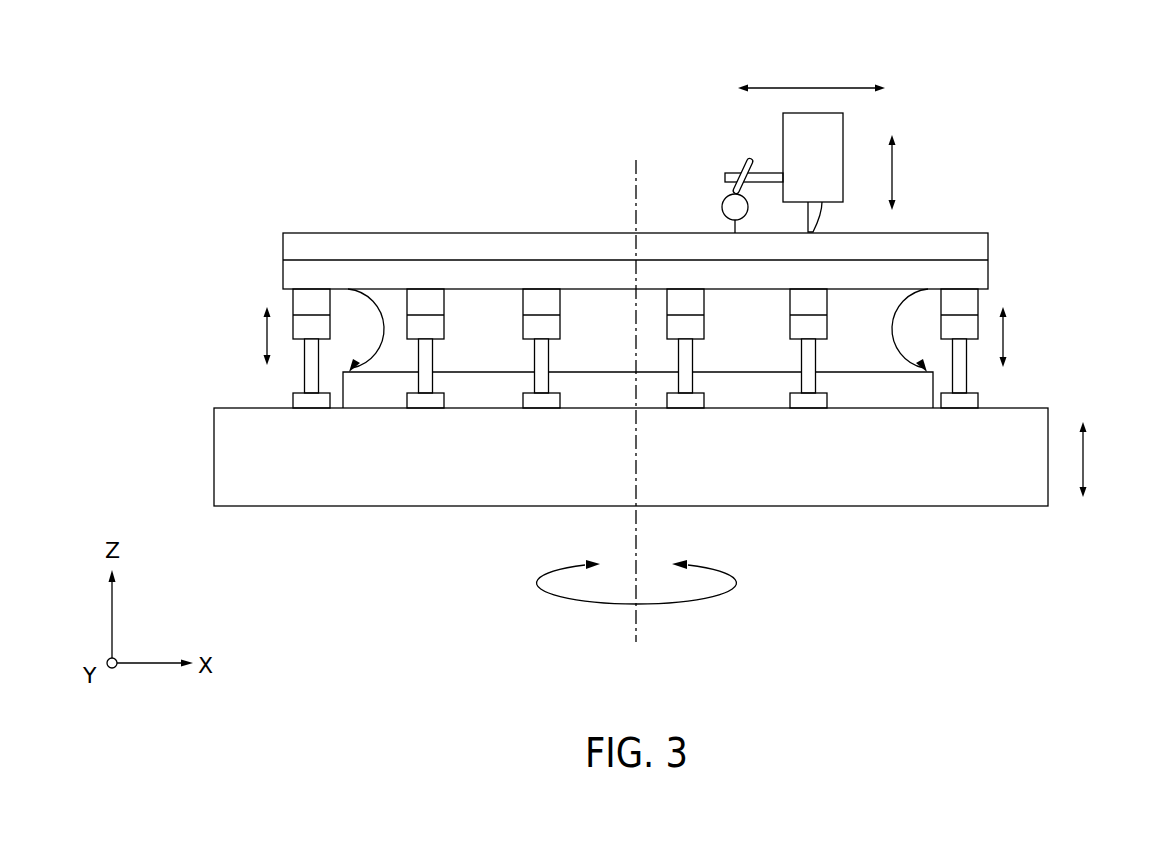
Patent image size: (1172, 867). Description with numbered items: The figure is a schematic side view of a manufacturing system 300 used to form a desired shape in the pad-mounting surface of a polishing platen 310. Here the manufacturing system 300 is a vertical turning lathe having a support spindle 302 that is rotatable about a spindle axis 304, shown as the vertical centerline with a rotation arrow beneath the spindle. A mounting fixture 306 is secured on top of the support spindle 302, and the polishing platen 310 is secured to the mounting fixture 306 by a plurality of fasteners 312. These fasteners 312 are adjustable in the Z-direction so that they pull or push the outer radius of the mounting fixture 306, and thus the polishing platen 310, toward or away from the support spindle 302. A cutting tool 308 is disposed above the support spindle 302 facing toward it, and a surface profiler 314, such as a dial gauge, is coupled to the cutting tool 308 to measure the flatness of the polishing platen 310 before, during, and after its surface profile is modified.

The manufacturing system 300 is at (1046, 152).
The support spindle 302 is at (835, 473).
The spindle axis 304 is at (636, 627).
The mounting fixture 306 is at (617, 353).
The cutting tool 308 is at (866, 128).
The polishing platen 310 is at (377, 233).
The fasteners 312 is at (430, 403).
The surface profiler 314 is at (722, 148).